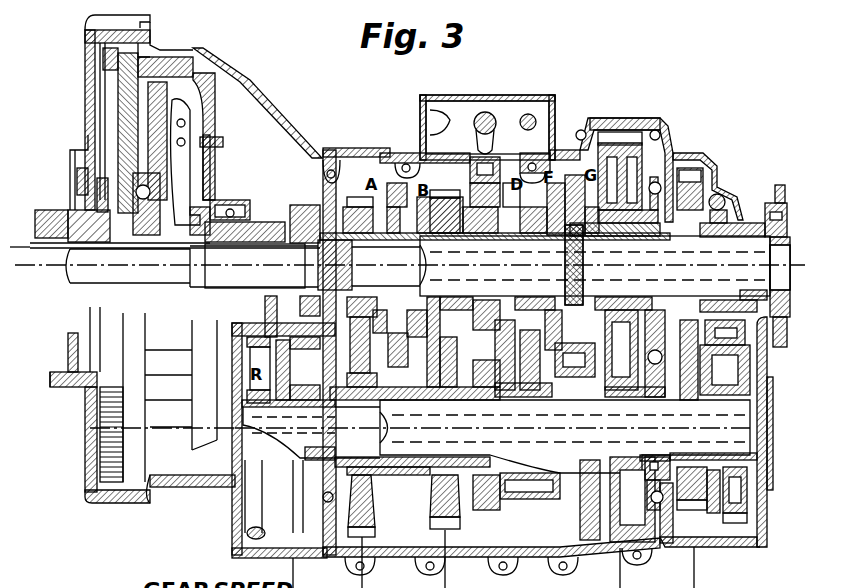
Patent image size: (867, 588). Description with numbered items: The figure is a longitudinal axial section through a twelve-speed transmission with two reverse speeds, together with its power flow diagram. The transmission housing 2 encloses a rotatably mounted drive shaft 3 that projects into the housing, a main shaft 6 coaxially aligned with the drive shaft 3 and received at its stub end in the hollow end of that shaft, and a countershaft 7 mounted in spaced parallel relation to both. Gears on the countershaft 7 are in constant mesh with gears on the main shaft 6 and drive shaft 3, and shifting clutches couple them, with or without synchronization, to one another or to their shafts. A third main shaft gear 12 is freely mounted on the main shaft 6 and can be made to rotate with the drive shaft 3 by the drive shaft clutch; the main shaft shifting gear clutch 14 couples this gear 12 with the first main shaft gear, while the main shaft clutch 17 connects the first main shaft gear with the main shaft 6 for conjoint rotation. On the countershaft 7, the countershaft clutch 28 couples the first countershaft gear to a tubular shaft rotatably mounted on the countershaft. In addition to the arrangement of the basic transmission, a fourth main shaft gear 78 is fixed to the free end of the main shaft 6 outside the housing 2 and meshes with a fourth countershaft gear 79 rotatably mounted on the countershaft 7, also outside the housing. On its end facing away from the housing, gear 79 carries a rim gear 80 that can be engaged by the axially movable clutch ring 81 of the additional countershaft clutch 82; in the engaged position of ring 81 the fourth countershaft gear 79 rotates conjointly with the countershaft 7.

The transmission housing 2 is at (648, 118).
The drive shaft 3 is at (266, 236).
The main shaft 6 is at (735, 258).
The countershaft 7 is at (740, 425).
The third main shaft gear 12 is at (437, 200).
The main shaft shifting gear clutch 14 is at (502, 148).
The main shaft clutch 17 is at (580, 150).
The countershaft clutch 28 is at (475, 522).
The fourth main shaft gear 78 is at (700, 178).
The fourth countershaft gear 79 is at (687, 508).
The rim gear 80 is at (747, 380).
The clutch ring 81 is at (748, 343).
The additional countershaft clutch 82 is at (734, 533).